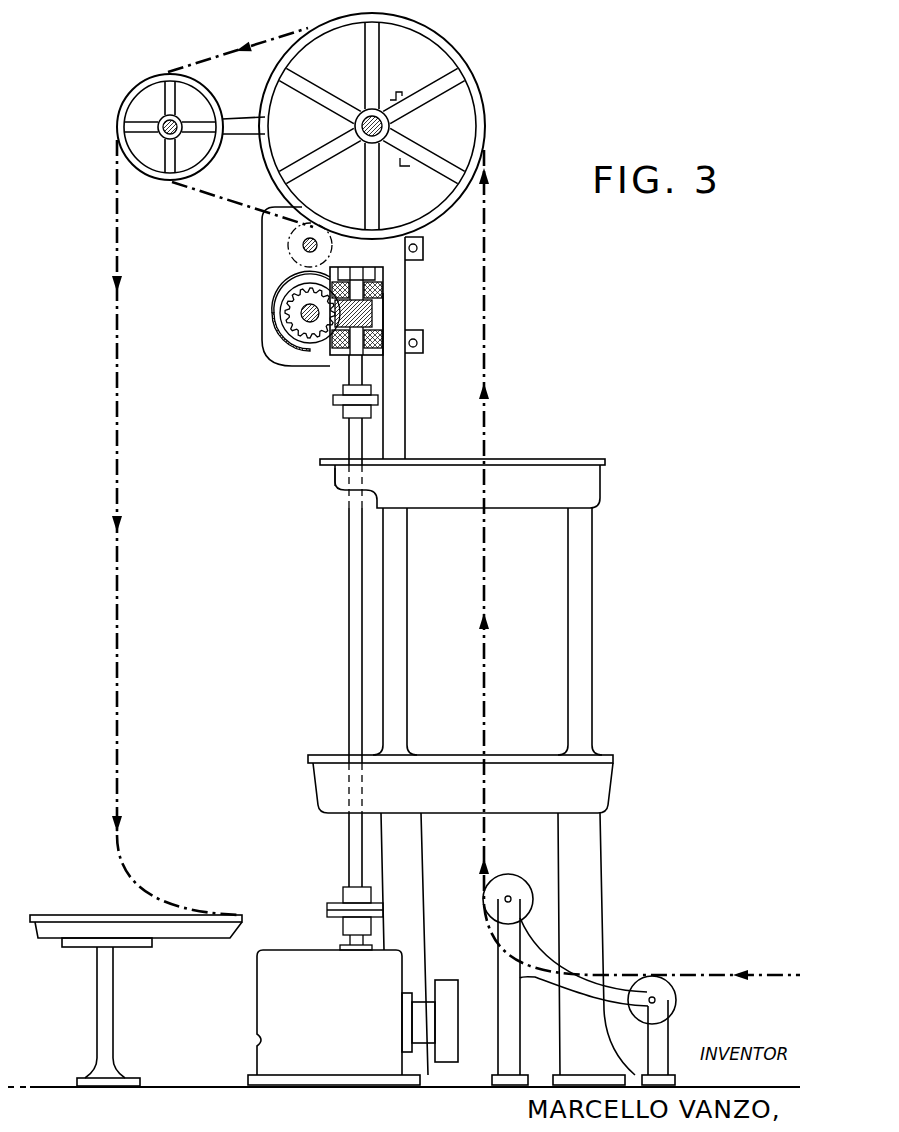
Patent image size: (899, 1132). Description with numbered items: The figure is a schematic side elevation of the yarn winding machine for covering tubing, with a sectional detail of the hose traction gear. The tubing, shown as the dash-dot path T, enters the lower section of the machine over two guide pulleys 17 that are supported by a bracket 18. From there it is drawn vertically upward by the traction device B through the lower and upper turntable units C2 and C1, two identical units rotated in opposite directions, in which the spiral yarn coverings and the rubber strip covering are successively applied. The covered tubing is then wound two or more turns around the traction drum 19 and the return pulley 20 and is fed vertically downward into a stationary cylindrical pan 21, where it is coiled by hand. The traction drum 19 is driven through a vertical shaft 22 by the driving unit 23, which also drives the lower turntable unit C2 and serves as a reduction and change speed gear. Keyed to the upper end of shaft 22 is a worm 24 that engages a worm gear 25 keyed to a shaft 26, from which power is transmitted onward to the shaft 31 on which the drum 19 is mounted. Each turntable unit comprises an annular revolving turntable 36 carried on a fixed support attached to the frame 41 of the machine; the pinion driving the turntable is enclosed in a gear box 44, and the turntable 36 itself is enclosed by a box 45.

The guide pulleys 17 is at (490, 898).
The bracket 18 is at (660, 1038).
The traction drum 19 is at (463, 95).
The return pulley 20 is at (124, 105).
The stationary cylindrical pan 21 is at (58, 920).
The vertical shaft 22 is at (348, 627).
The driving unit 23 is at (272, 1003).
The worm 24 is at (385, 313).
The worm gear 25 is at (290, 346).
The shaft 26 is at (299, 314).
The shaft 31 is at (392, 126).
The annular revolving turntable 36 is at (606, 461).
The frame 41 is at (404, 601).
The gear box 44 is at (335, 479).
The box 45 is at (584, 487).
The traction device B is at (447, 285).
The upper turntable unit C1 is at (526, 449).
The lower turntable unit C2 is at (518, 750).
The thread T is at (122, 508).